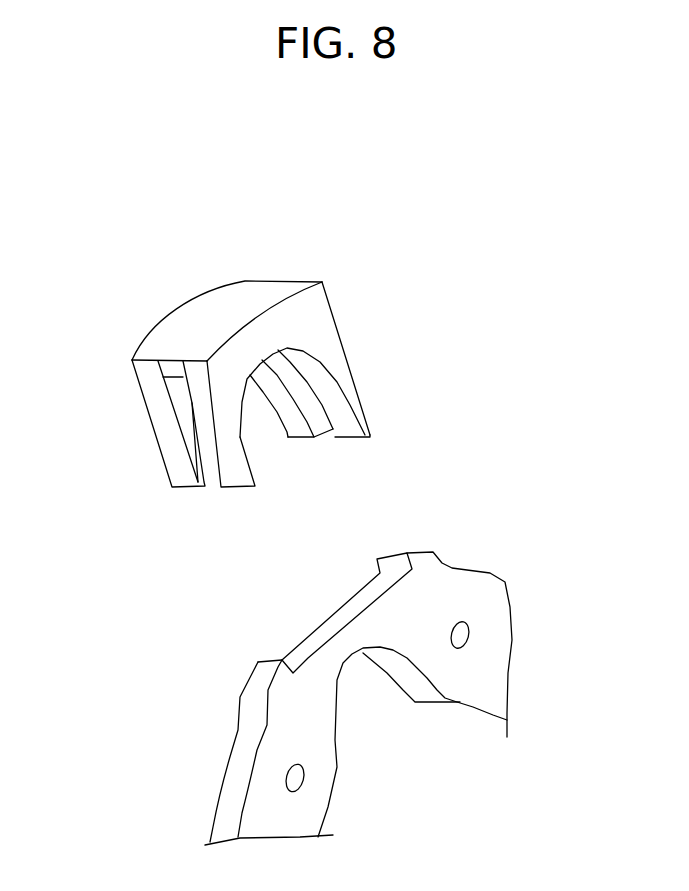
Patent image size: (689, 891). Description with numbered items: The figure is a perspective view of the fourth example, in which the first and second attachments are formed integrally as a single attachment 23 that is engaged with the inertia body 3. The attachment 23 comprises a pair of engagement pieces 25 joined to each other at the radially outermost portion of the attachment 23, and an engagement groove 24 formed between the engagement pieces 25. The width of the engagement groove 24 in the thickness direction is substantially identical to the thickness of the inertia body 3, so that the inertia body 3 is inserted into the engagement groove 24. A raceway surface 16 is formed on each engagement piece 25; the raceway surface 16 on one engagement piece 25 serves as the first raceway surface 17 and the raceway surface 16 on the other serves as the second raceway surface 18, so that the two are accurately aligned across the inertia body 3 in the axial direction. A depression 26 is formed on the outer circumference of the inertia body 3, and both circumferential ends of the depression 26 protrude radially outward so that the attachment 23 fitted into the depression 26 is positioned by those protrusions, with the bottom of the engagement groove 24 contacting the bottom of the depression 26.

The inertia body 3 is at (297, 823).
The raceway surface 16 is at (386, 433).
The first raceway surface 17 is at (300, 432).
The second raceway surface 18 is at (350, 430).
The attachment 23 is at (277, 287).
The engagement groove 24 is at (206, 496).
The engagement pieces 25 is at (175, 471).
The depression 26 is at (297, 650).